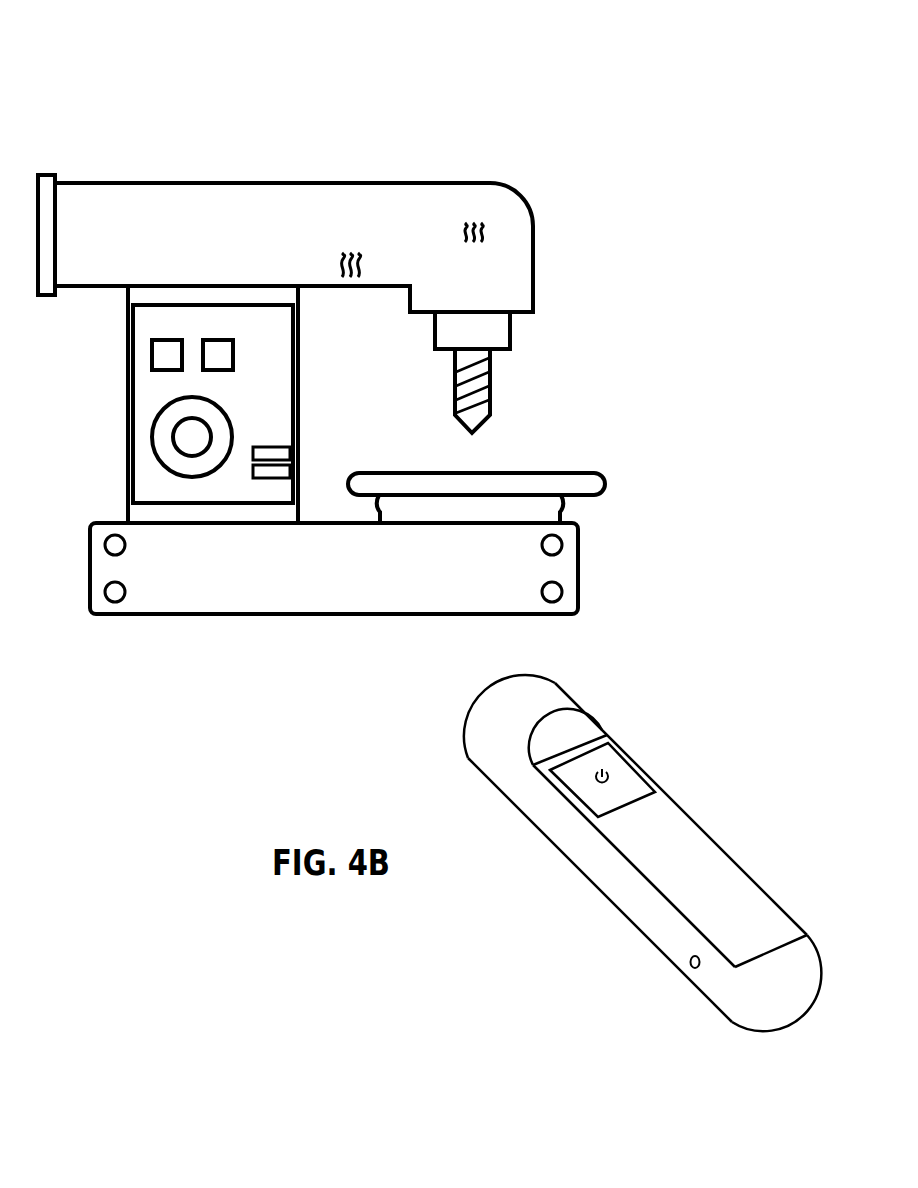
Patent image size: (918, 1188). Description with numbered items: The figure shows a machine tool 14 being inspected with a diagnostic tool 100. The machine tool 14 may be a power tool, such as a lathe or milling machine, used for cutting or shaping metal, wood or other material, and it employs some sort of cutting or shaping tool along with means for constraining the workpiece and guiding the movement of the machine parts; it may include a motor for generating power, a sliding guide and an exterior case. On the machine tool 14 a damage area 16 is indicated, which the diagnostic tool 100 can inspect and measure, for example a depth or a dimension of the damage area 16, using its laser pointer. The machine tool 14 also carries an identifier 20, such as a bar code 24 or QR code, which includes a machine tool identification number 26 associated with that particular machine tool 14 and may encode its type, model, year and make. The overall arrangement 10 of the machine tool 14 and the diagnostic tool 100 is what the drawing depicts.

The machine tool (drill press) 10 is at (353, 86).
The head housing / arm 14 is at (153, 197).
The heat or vibration indicators 16 is at (367, 264).
The sensor assembly 20 is at (382, 392).
The first sensor 24 is at (288, 453).
The second sensor 26 is at (288, 472).
The portable monitoring device 100 is at (650, 706).